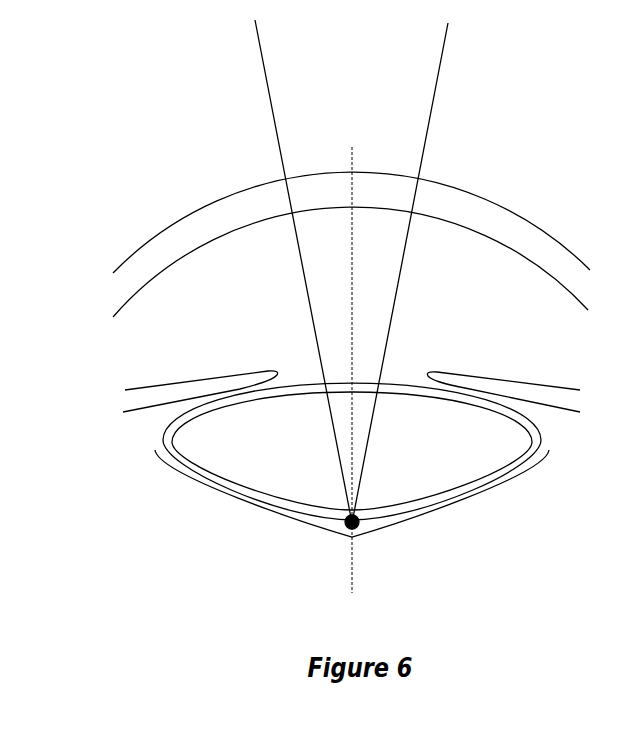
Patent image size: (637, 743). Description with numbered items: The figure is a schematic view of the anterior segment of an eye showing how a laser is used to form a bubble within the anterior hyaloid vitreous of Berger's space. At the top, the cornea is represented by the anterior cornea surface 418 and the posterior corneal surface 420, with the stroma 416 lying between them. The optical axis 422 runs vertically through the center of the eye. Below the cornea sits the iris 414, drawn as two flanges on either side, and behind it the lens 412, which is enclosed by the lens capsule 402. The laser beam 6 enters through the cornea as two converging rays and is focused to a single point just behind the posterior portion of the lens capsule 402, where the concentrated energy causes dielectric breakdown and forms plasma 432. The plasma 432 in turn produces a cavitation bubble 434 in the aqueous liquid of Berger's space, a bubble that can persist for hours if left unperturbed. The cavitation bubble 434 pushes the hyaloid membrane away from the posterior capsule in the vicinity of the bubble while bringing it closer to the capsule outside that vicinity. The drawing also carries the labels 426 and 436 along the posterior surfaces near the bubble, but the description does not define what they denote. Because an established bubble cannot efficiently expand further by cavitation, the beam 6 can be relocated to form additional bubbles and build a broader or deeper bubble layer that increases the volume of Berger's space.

The laser beam 6 is at (428, 67).
The lens capsule 402 is at (315, 448).
The lens 412 is at (207, 483).
The iris 414 is at (220, 382).
The stroma 416 is at (327, 233).
The anterior cornea surface 418 is at (245, 188).
The posterior corneal surface 420 is at (257, 222).
The optical axis 422 is at (335, 363).
The outer reflector surface 426 is at (502, 488).
The plasma 432 is at (346, 505).
The cavitation bubble 434 is at (350, 535).
The bottom rim surface 436 is at (360, 535).